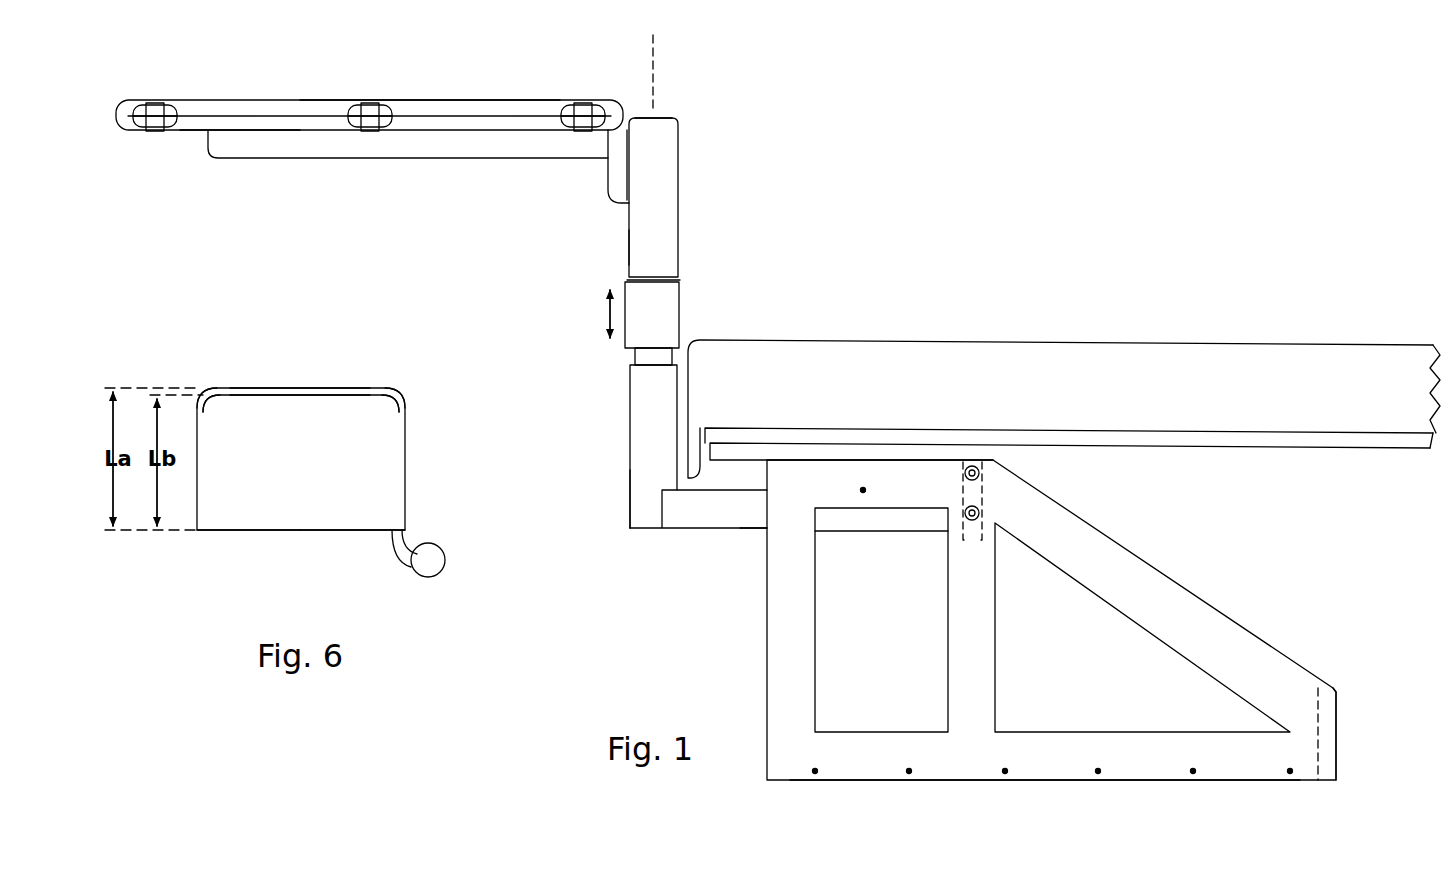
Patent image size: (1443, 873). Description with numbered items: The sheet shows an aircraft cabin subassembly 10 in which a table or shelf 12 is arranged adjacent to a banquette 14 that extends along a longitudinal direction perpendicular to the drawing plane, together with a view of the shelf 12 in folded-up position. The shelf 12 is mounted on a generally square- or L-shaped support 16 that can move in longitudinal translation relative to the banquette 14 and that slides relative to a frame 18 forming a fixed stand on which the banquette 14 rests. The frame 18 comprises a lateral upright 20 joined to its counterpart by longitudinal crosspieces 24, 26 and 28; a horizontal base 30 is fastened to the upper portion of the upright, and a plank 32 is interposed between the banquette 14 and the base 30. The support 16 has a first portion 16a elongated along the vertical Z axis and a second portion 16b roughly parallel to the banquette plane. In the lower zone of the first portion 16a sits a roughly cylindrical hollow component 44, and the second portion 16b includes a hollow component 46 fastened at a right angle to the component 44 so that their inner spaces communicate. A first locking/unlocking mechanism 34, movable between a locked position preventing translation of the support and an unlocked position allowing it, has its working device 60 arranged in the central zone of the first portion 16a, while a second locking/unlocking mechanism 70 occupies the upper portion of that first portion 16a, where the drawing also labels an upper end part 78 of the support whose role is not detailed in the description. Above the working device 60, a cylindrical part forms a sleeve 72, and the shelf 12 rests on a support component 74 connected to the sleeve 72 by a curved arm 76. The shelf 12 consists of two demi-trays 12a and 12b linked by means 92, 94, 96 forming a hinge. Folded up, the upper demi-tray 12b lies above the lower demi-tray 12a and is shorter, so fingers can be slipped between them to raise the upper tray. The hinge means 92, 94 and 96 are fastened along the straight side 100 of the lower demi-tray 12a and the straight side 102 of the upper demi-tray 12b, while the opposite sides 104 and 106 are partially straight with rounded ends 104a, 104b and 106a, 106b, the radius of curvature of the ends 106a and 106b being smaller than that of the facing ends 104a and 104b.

In FIG. 1, the aircraft subassembly 10 is at (1066, 140).
In FIG. 1, the shelf 12 is at (370, 129).
In FIG. 6, the shelf 12 is at (317, 455).
In FIG. 1, the lower demi-tray 12a is at (205, 133).
In FIG. 6, the lower demi-tray 12a is at (352, 385).
In FIG. 1, the upper demi-tray 12b is at (470, 102).
In FIG. 6, the upper demi-tray 12b is at (301, 459).
In FIG. 1, the banquette 14 is at (1064, 393).
In FIG. 1, the support 16 is at (660, 331).
In FIG. 1, the first portion of the support 16a is at (608, 388).
In FIG. 1, the second portion of the support 16b is at (758, 535).
In FIG. 1, the frame 18 is at (1033, 652).
In FIG. 1, the lateral upright 20 is at (968, 758).
In FIG. 1, the longitudinal crosspiece 24 is at (797, 648).
In FIG. 1, the longitudinal crosspiece 26 is at (985, 490).
In FIG. 1, the longitudinal crosspiece 28 is at (1345, 730).
In FIG. 1, the horizontal base 30 is at (840, 455).
In FIG. 1, the plank 32 is at (1278, 445).
In FIG. 1, the first locking/unlocking mechanism 34 is at (694, 313).
In FIG. 1, the hollow component 44 is at (634, 502).
In FIG. 1, the hollow component 46 is at (683, 520).
In FIG. 1, the working device 60 is at (672, 330).
In FIG. 1, the second locking/unlocking mechanism 70 is at (678, 172).
In FIG. 1, the sleeve 72 is at (633, 250).
In FIG. 6, the sleeve 72 is at (435, 545).
In FIG. 1, the support component 74 is at (521, 153).
In FIG. 1, the curved arm 76 is at (612, 190).
In FIG. 6, the curved arm 76 is at (395, 570).
In FIG. 1, the column top cap 78 is at (680, 122).
In FIG. 1, the hinge means 92 is at (156, 108).
In FIG. 1, the hinge means 94 is at (370, 108).
In FIG. 1, the hinge means 96 is at (583, 108).
In FIG. 6, the straight side of the lower demi-tray 100 is at (258, 533).
In FIG. 6, the straight side of the upper demi-tray 102 is at (348, 533).
In FIG. 6, the opposite side of the lower demi-tray 104 is at (304, 386).
In FIG. 6, the rounded end 104a is at (206, 386).
In FIG. 6, the rounded end 104b is at (396, 387).
In FIG. 6, the opposite side of the upper demi-tray 106 is at (304, 397).
In FIG. 6, the rounded end 106a is at (218, 412).
In FIG. 6, the rounded end 106b is at (380, 412).
In FIG. 1, the Z axis Z is at (656, 40).